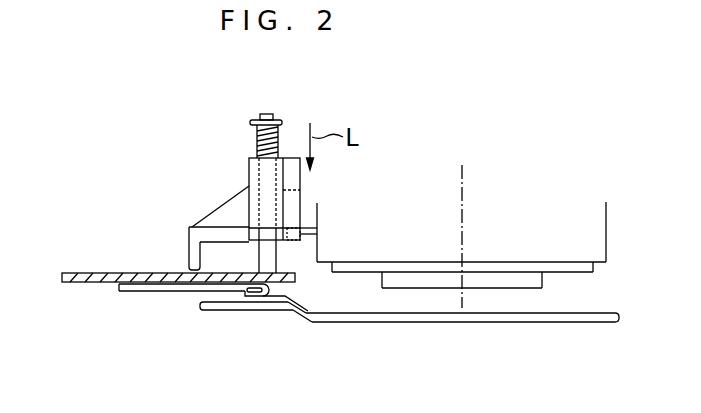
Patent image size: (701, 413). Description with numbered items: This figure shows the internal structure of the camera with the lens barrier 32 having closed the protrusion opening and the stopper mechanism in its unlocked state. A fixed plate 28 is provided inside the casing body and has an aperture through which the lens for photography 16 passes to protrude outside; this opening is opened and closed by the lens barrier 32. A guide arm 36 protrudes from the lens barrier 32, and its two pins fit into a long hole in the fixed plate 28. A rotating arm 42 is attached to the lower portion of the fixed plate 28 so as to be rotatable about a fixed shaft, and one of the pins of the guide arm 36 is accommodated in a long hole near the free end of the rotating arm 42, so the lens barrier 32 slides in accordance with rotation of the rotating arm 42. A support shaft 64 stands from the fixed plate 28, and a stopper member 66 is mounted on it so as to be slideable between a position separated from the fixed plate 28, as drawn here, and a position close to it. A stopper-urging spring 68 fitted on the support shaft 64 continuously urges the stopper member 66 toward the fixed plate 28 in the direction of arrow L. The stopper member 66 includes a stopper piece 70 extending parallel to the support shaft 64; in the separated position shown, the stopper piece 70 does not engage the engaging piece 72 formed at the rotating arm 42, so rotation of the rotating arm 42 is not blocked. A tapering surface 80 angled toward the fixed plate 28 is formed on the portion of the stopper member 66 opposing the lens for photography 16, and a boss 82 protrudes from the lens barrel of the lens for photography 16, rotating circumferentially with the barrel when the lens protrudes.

The lens for photography 16 is at (610, 244).
The fixed plate 28 is at (74, 273).
The lens barrier 32 is at (368, 323).
The guide arm 36 is at (262, 311).
The rotating arm 42 is at (150, 292).
The support shaft 64 is at (268, 114).
The stopper member 66 is at (212, 209).
The stopper-urging spring 68 is at (258, 140).
The stopper piece 70 is at (189, 244).
The engaging piece 72 is at (298, 295).
The tapering surface 80 is at (296, 206).
The boss 82 is at (307, 243).